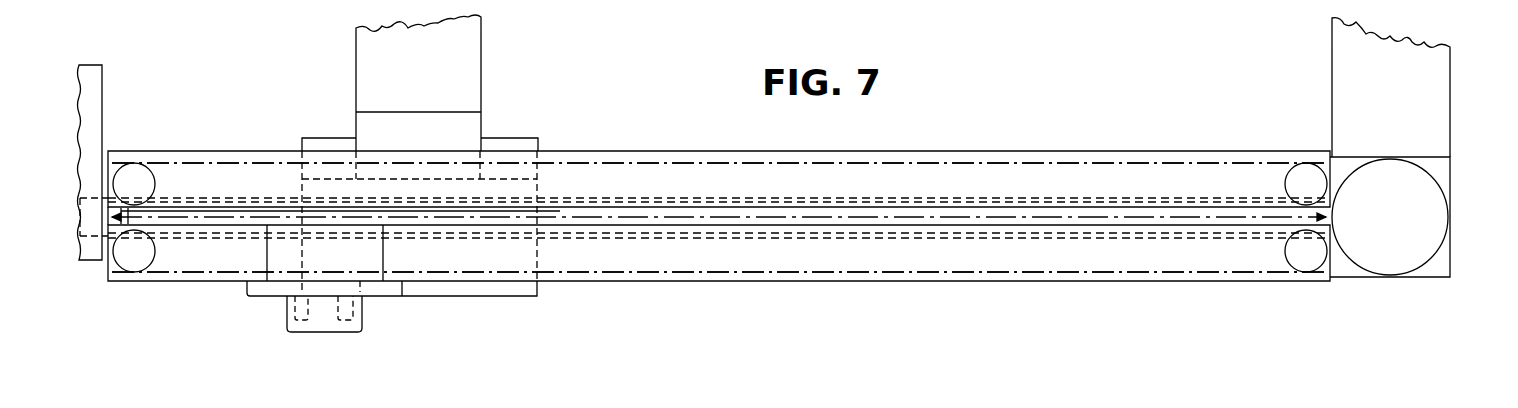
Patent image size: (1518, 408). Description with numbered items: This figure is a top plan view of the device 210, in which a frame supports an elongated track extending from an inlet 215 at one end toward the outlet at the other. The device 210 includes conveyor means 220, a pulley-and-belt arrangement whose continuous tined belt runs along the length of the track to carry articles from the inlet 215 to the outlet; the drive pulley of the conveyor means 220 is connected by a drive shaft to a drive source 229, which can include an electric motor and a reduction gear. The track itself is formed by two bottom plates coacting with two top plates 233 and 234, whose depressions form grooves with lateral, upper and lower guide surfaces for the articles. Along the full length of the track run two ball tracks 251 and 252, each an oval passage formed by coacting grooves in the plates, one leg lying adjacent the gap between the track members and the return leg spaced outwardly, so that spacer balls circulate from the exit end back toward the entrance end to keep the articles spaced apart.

The device 210 is at (957, 151).
The inlet 215 is at (1330, 228).
The conveyor means 220 is at (847, 218).
The drive source 229 is at (481, 88).
The top plate 233 is at (609, 151).
The top plate 234 is at (1036, 281).
The ball track 251 is at (1045, 163).
The ball track 252 is at (1163, 272).